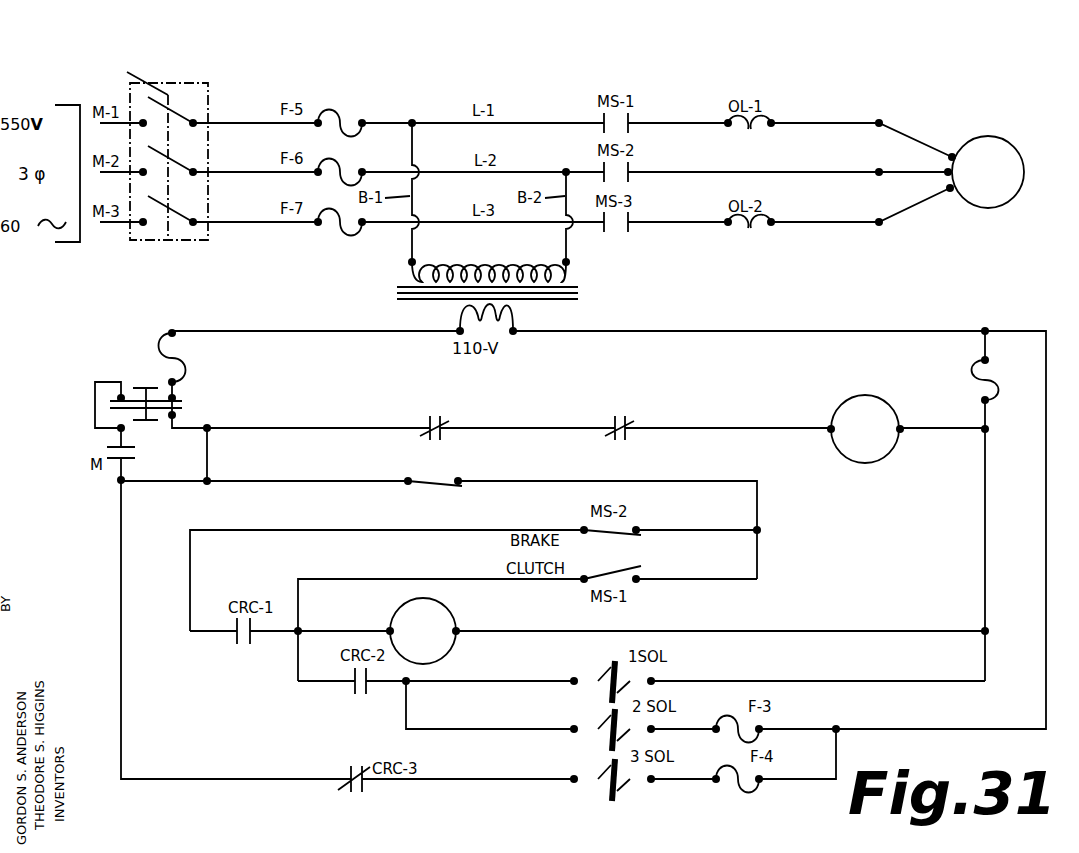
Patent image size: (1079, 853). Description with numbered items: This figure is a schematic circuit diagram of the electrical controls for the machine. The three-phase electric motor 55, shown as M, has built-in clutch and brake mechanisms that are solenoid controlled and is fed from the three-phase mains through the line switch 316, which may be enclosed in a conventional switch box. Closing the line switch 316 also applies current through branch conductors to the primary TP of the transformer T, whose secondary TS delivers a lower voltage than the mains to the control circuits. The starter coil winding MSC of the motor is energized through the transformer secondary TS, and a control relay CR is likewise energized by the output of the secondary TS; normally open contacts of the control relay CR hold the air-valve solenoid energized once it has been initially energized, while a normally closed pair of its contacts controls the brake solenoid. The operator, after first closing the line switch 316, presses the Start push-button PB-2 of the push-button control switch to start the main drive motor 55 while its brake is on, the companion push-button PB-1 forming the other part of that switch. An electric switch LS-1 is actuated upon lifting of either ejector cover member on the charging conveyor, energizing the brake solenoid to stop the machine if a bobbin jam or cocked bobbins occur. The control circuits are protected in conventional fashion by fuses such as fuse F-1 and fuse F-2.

The line switch 316 is at (168, 102).
The electric motor 55 is at (997, 157).
The transformer primary TP is at (484, 259).
The transformer T is at (380, 293).
The transformer secondary TS is at (515, 318).
The fuse F-1 is at (186, 359).
The fuse F-2 is at (973, 380).
The push-button PB-1 is at (106, 422).
The Start push-button PB-2 is at (106, 404).
The starter coil winding MSC is at (865, 429).
The electric switch LS-1 is at (433, 471).
The control relay CR is at (423, 631).